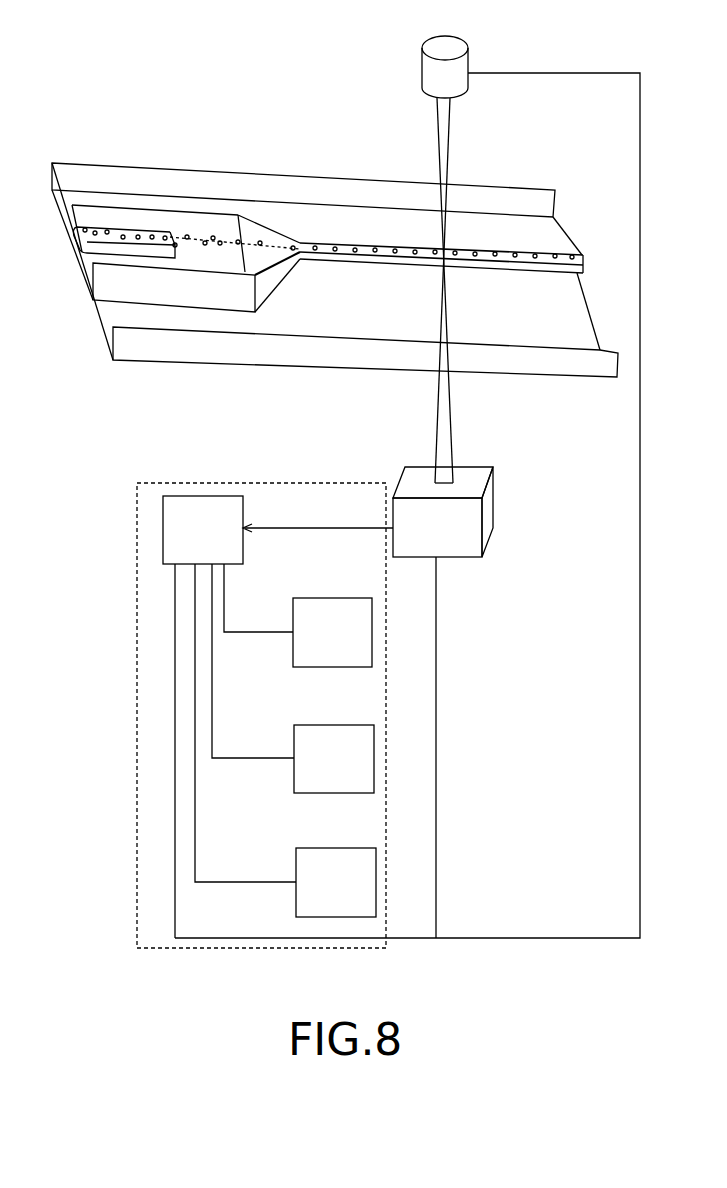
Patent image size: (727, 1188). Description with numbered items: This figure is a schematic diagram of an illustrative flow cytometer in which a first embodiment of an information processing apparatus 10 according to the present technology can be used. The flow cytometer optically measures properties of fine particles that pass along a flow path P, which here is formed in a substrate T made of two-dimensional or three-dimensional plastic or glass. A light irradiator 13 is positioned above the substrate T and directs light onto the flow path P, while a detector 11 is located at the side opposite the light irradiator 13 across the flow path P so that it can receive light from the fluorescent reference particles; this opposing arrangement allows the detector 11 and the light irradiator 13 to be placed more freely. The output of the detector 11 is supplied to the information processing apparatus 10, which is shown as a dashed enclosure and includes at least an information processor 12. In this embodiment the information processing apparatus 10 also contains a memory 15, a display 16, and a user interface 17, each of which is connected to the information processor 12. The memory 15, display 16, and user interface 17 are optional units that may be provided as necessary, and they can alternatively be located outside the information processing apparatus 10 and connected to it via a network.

The information processing apparatus 10 is at (130, 526).
The detector 11 is at (488, 508).
The information processor 12 is at (229, 717).
The light irradiator 13 is at (444, 50).
The memory 15 is at (332, 632).
The display 16 is at (334, 759).
The user interface 17 is at (336, 882).
The substrate T is at (317, 217).
The flow path P is at (342, 253).